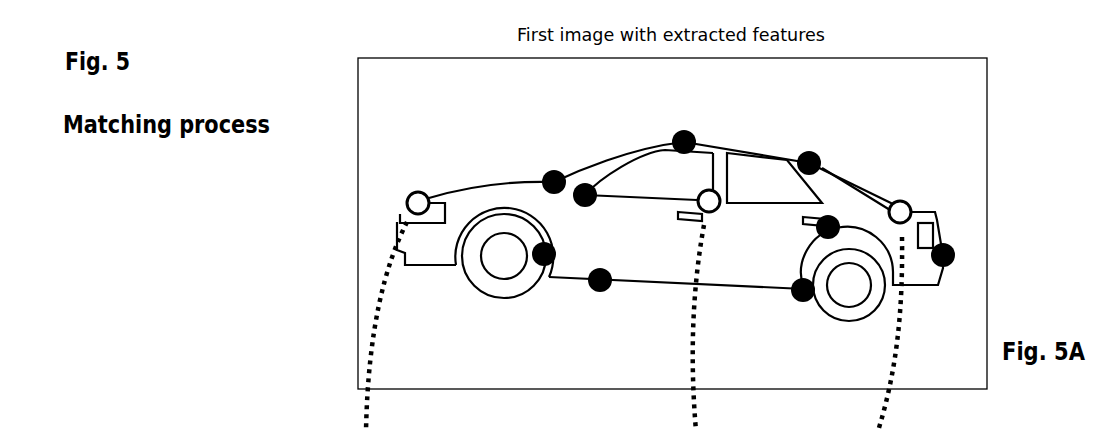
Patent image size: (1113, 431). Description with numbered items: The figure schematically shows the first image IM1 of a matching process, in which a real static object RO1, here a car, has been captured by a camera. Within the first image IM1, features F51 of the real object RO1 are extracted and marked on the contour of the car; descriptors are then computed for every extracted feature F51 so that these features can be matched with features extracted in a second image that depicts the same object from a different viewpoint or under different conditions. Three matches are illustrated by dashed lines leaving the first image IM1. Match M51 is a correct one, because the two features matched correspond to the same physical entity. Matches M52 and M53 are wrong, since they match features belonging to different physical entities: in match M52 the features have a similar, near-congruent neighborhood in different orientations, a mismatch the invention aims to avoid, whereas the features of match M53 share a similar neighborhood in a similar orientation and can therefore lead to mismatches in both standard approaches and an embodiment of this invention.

In FIG. 5A, the features F51 is at (667, 135).
In FIG. 5A, the first image IM1 is at (353, 236).
In FIG. 5A, the real static object RO1 is at (646, 267).
In FIG. 5, the match M51 is at (373, 408).
In FIG. 5, the match M52 is at (688, 410).
In FIG. 5, the match M53 is at (888, 408).